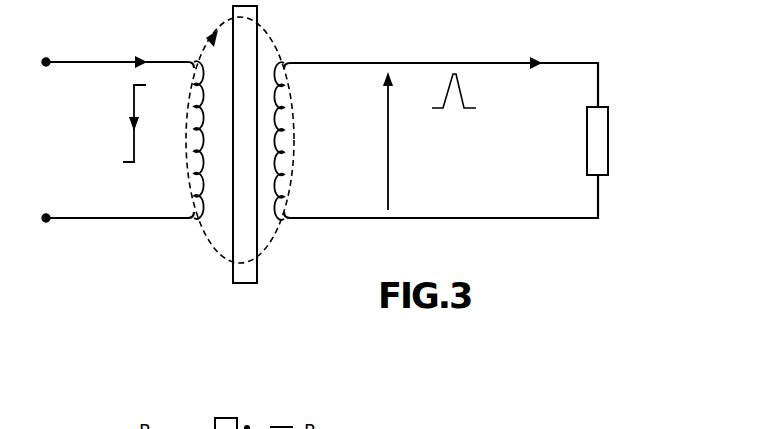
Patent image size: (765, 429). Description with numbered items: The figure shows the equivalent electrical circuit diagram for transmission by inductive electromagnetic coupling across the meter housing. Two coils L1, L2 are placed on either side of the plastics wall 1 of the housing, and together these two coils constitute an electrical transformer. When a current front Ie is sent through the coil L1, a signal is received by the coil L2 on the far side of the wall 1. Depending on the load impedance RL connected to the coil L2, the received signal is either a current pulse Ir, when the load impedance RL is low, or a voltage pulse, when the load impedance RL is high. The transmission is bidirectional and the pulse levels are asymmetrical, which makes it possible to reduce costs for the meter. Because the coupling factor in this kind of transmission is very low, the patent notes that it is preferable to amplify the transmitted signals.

The plastics wall 1 is at (247, 290).
The coil L1 is at (197, 177).
The coil L2 is at (285, 143).
The load impedance RL is at (620, 141).
The current front Ie is at (86, 123).
The current pulse Ir is at (417, 141).